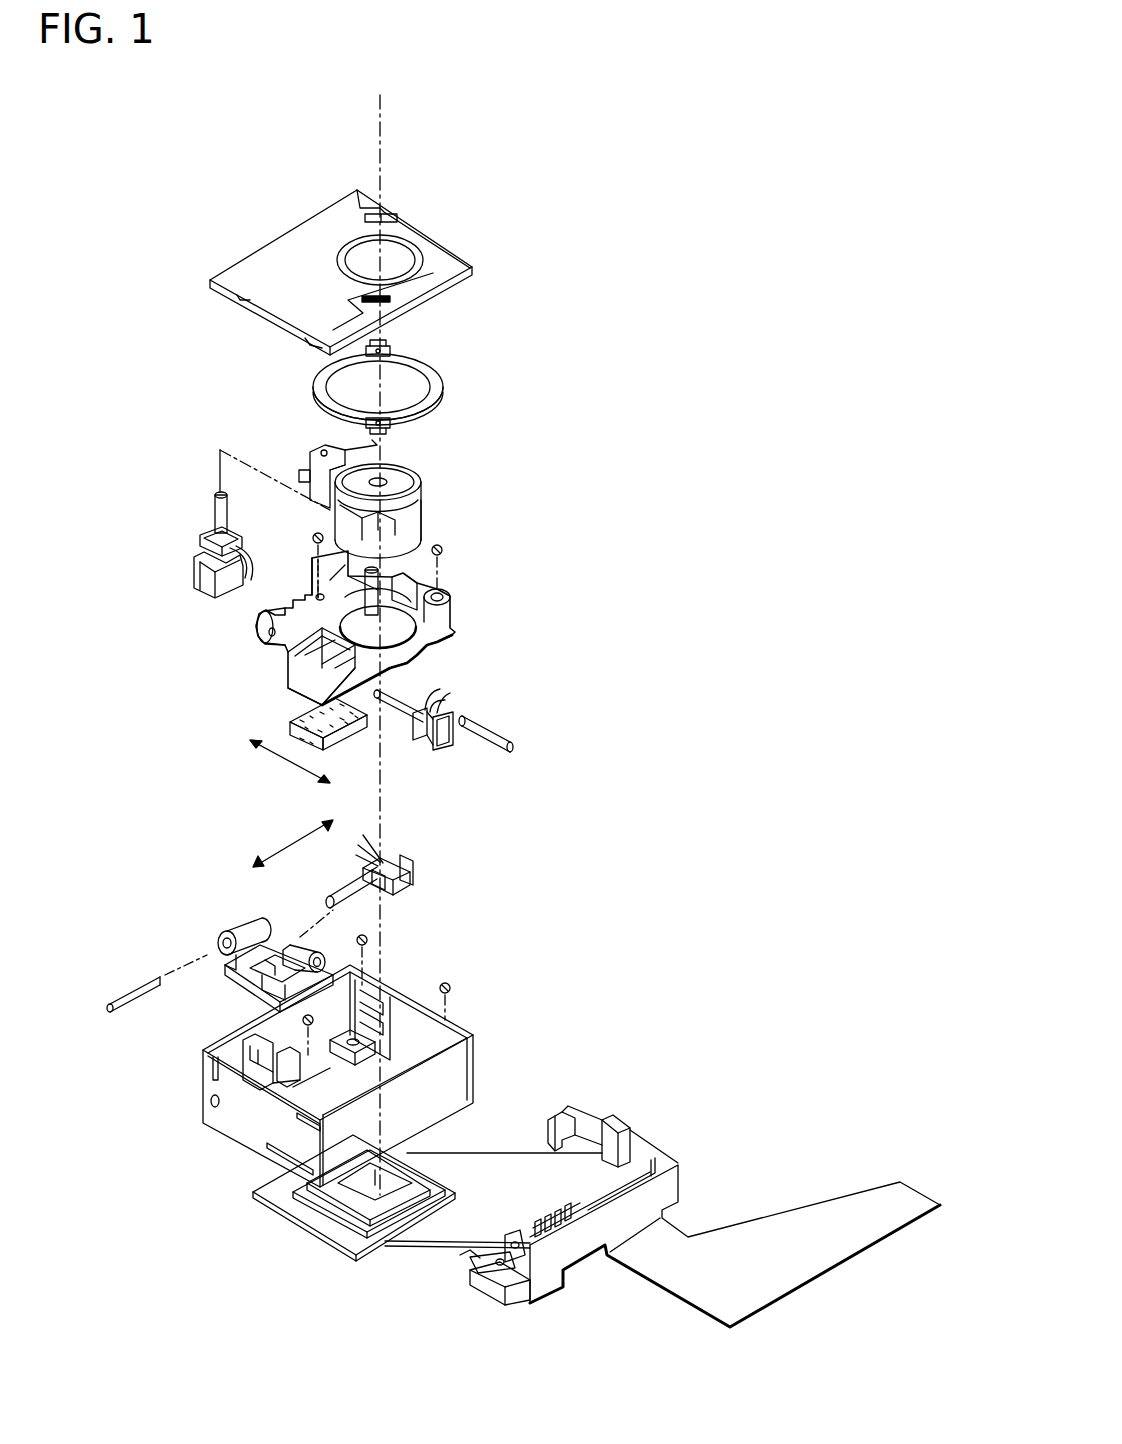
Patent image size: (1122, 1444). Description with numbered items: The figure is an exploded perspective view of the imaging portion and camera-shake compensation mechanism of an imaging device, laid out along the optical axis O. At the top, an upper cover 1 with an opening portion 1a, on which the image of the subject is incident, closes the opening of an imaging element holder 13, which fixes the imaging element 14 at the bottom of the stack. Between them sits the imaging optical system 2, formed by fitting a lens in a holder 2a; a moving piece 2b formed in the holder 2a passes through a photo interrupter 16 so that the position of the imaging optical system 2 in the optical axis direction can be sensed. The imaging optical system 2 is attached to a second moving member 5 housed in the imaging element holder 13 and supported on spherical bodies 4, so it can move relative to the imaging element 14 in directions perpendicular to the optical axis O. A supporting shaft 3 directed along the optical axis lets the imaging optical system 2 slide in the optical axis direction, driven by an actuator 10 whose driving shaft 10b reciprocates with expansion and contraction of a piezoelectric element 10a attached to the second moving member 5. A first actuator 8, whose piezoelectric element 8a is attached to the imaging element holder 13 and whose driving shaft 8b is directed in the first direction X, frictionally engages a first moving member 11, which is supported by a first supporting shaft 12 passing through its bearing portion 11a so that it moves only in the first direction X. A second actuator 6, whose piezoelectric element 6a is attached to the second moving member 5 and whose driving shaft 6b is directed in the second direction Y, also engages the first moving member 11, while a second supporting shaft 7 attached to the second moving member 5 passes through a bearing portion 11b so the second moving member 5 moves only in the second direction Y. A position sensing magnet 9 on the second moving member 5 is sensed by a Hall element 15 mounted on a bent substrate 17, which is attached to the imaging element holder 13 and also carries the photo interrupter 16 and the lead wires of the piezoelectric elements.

The optical axis O is at (381, 187).
The upper cover 1 is at (283, 268).
The opening portion 1a is at (400, 262).
The imaging optical system 2 is at (397, 478).
The holder 2a is at (415, 514).
The moving piece 2b is at (377, 445).
The supporting shaft 3 is at (407, 633).
The spherical bodies 4 is at (318, 538).
The second moving member 5 is at (452, 617).
The second actuator 6 is at (438, 748).
The piezoelectric element 6a is at (450, 705).
The driving shaft 6b is at (387, 712).
The second supporting shaft 7 is at (517, 745).
The first actuator 8 is at (415, 878).
The piezoelectric element 8a is at (410, 857).
The driving shaft 8b is at (360, 895).
The position sensing magnet 9 is at (305, 722).
The actuator 10 is at (200, 537).
The piezoelectric element 10a is at (200, 583).
The driving shaft 10b is at (218, 510).
The first moving member 11 is at (230, 925).
The bearing portion 11a is at (248, 925).
The bearing portion 11b is at (305, 935).
The first supporting shaft 12 is at (120, 1010).
The imaging element holder 13 is at (463, 1030).
The imaging element 14 is at (362, 1190).
The Hall element 15 is at (507, 1285).
The photo interrupter 16 is at (570, 1105).
The substrate 17 is at (660, 1160).
The first direction X is at (293, 843).
The second direction Y is at (290, 766).